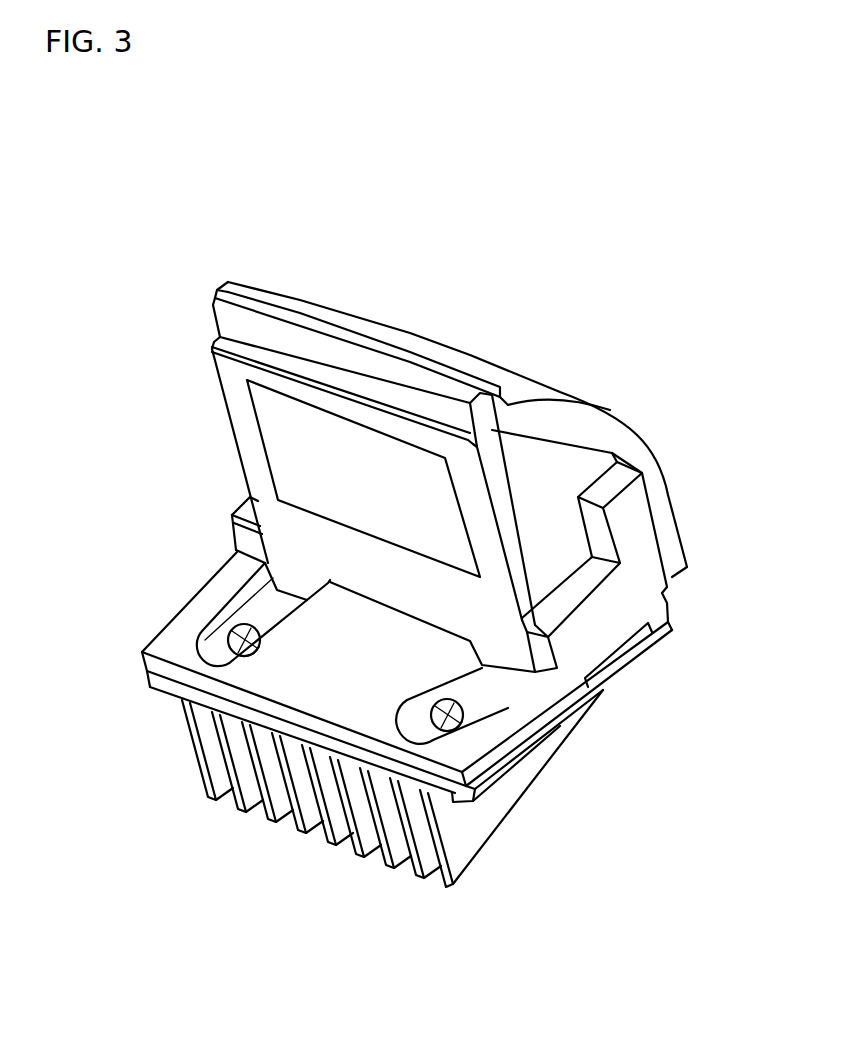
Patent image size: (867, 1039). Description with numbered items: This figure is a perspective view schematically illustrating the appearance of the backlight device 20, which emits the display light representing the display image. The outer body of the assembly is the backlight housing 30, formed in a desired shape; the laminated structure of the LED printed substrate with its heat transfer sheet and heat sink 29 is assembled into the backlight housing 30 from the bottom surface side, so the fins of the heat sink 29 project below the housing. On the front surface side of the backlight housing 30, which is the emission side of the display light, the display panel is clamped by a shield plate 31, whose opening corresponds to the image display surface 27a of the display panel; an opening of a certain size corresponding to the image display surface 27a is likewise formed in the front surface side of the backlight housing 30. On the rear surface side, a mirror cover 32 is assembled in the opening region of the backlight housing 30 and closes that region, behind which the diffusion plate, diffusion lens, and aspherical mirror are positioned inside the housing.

The backlight device 20 is at (447, 268).
The image display surface 27a is at (297, 448).
The heat sink 29 is at (480, 840).
The backlight housing 30 is at (560, 550).
The shield plate 31 is at (278, 538).
The mirror cover 32 is at (533, 388).